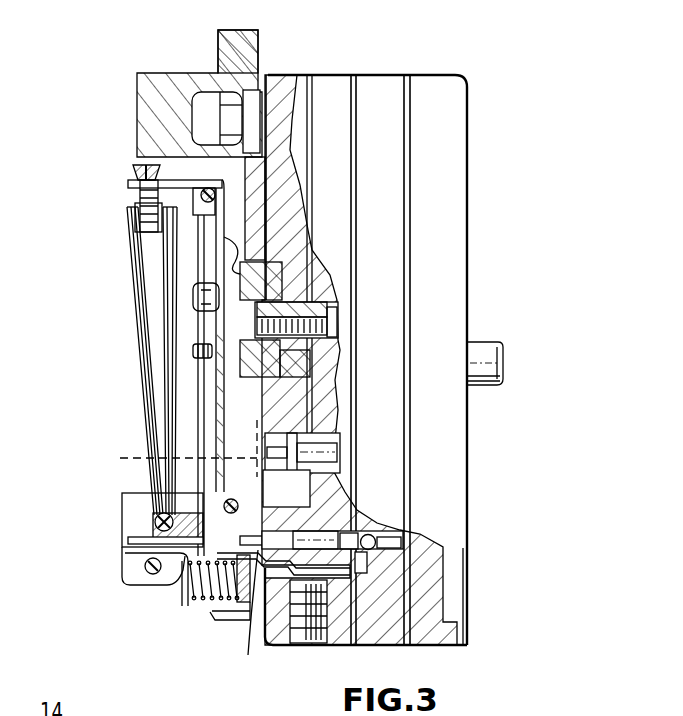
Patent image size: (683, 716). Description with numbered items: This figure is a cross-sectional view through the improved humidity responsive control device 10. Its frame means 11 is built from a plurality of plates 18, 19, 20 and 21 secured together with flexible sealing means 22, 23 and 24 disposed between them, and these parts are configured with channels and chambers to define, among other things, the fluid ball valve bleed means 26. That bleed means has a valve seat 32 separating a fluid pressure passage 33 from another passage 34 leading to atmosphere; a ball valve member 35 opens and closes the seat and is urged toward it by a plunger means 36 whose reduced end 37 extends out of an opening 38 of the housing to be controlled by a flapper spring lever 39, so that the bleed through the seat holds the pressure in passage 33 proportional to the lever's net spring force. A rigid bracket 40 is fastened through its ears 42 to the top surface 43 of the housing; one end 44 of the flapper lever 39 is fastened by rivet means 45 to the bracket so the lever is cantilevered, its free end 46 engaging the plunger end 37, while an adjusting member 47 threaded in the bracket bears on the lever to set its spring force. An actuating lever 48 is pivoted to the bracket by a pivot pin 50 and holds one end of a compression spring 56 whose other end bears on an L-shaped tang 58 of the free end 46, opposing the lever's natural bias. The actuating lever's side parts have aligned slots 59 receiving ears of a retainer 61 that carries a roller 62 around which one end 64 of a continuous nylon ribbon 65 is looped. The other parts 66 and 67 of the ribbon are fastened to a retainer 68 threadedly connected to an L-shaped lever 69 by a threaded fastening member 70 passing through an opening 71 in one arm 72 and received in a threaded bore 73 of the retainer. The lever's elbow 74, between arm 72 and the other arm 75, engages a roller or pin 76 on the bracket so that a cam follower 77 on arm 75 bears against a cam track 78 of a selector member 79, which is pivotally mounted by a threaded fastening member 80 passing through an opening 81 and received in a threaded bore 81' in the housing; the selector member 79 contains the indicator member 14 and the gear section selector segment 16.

The humidity responsive control device 10 is at (394, 326).
The frame means 11 is at (296, 82).
The indicator member 14 is at (137, 110).
The selector segment 16 is at (232, 30).
The plate 18 is at (268, 77).
The plate 19 is at (358, 90).
The plate 20 is at (382, 86).
The plate 21 is at (452, 97).
The flexible sealing means 22 is at (347, 86).
The flexible sealing means 23 is at (373, 90).
The flexible sealing means 24 is at (433, 181).
The fluid ball valve bleed means 26 is at (317, 588).
The valve seat 32 is at (362, 555).
The fluid pressure passage 33 is at (398, 540).
The passage 34 is at (360, 562).
The ball valve member 35 is at (377, 537).
The plunger means 36 is at (313, 540).
The reduced end 37 is at (246, 652).
The opening 38 is at (252, 505).
The flapper spring lever 39 is at (218, 405).
The rigid bracket 40 is at (216, 385).
The ears 42 is at (178, 448).
The top surface 43 is at (268, 378).
The end 44 is at (198, 318).
The rivet means 45 is at (195, 297).
The free end 46 is at (143, 550).
The adjusting member 47 is at (193, 352).
The actuating lever 48 is at (128, 527).
The pivot pin 50 is at (226, 505).
The compression spring 56 is at (192, 606).
The L-shaped tang 58 is at (183, 595).
The aligned slots 59 is at (127, 541).
The retainer 61 is at (200, 545).
The roller 62 is at (155, 518).
The end of ribbon 64 is at (150, 503).
The continuous nylon ribbon 65 is at (152, 418).
The ribbon part 66 is at (130, 243).
The ribbon part 67 is at (135, 236).
The retainer 68 is at (138, 208).
The L-shaped lever 69 is at (203, 192).
The threaded fastening member 70 is at (133, 168).
The opening 71 is at (128, 180).
The arm 72 is at (190, 180).
The threaded bore 73 is at (359, 360).
The elbow 74 is at (252, 168).
The arm 75 is at (300, 232).
The roller or pin 76 is at (303, 185).
The cam follower 77 is at (300, 246).
The cam track 78 is at (232, 262).
The selector member 79 is at (262, 173).
The threaded fastening member 80 is at (320, 313).
The opening 81 is at (157, 385).
The threaded bore 81' is at (317, 315).